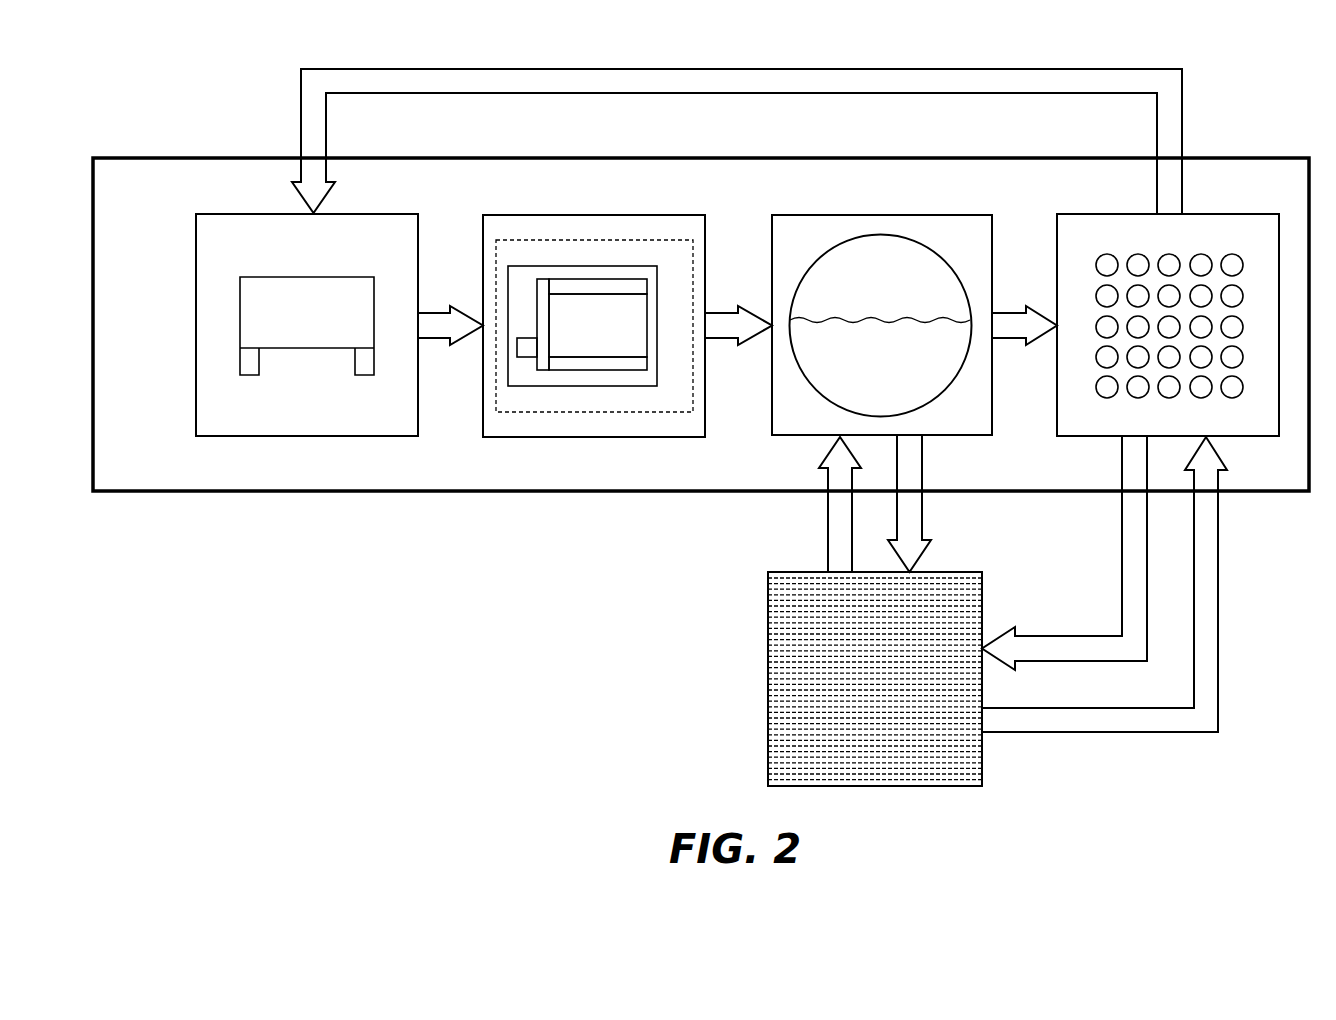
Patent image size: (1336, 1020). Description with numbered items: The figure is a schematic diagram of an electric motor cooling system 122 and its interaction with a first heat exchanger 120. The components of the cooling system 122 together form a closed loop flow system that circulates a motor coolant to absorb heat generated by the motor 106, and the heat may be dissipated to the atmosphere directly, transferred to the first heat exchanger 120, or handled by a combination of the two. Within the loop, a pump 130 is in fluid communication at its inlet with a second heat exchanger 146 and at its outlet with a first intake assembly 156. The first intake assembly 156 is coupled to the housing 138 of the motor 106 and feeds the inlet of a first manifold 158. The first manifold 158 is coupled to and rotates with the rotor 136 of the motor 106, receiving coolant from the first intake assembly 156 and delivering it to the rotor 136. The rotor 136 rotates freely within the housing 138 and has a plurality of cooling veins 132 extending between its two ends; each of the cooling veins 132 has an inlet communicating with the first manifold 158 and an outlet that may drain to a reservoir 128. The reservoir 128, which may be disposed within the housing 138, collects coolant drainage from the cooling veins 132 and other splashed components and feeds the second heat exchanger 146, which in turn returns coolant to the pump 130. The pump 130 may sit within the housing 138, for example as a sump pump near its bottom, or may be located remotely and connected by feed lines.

The motor 106 is at (575, 240).
The first heat exchanger 120 is at (768, 595).
The electric motor cooling system 122 is at (121, 202).
The reservoir 128 is at (902, 376).
The pump 130 is at (328, 323).
The cooling veins 132 is at (623, 292).
The rotor 136 is at (619, 336).
The housing 138 is at (553, 264).
The second heat exchanger 146 is at (1219, 226).
The first intake assembly 156 is at (523, 345).
The first manifold 158 is at (536, 308).